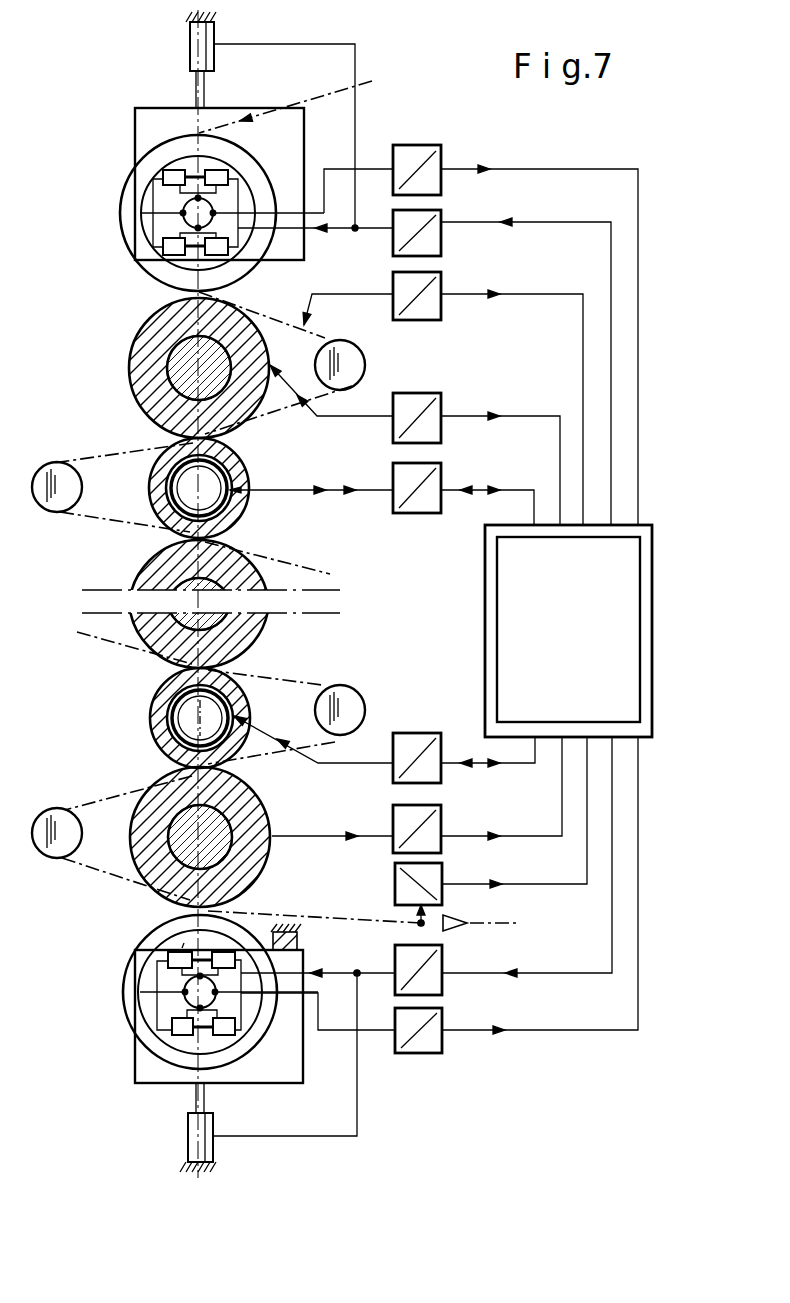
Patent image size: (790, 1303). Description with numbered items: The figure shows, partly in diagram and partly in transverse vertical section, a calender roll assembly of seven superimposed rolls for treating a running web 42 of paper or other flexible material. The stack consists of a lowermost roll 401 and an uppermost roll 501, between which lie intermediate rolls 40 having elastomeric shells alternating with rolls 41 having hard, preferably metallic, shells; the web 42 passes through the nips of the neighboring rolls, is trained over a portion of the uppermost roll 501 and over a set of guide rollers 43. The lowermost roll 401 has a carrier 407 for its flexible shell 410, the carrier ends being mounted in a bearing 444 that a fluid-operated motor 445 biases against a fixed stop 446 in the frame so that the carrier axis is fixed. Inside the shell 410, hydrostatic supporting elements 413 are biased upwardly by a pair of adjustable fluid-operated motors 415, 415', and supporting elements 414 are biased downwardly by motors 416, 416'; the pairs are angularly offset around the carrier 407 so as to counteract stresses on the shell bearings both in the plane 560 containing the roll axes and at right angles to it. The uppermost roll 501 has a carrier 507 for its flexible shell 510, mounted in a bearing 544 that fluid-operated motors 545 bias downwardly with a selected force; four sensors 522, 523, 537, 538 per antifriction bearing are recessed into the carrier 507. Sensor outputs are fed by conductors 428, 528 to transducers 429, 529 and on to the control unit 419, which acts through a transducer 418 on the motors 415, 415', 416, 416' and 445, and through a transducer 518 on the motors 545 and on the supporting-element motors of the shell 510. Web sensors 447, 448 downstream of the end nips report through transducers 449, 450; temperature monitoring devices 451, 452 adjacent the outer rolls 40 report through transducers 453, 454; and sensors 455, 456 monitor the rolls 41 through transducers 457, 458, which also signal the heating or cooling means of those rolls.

The intermediate roll with elastomeric shell 40 is at (145, 371).
The intermediate roll with hard shell 41 is at (243, 466).
The running web 42 is at (372, 80).
The guide roller 43 is at (363, 352).
The lowermost roll 401 is at (170, 1072).
The carrier 407 is at (184, 992).
The flexible shell 410 is at (235, 1052).
The hydrostatic supporting element 413 is at (182, 943).
The hydrostatic supporting element 414 is at (184, 1040).
The adjustable fluid-operated motor 415 is at (142, 981).
The adjustable fluid-operated motor 415' is at (263, 954).
The adjustable fluid-operated motor 416 is at (145, 1036).
The adjustable fluid-operated motor 416' is at (284, 1055).
The transducer 418 is at (443, 960).
The control unit 419 is at (585, 644).
The conductor 428 is at (375, 1032).
The transducer 429 is at (427, 1042).
The bearing 444 is at (145, 1074).
The fluid-operated motor 445 is at (198, 1148).
The fixed stop 446 is at (299, 941).
The web sensor 447 is at (314, 317).
The web sensor 448 is at (417, 922).
The transducer 449 is at (441, 317).
The transducer 450 is at (430, 875).
The temperature monitoring device 451 is at (331, 379).
The temperature monitoring device 452 is at (281, 836).
The transducer 453 is at (442, 407).
The transducer 454 is at (433, 822).
The temperature sensor 455 is at (248, 506).
The temperature sensor 456 is at (246, 712).
The transducer 457 is at (442, 483).
The transducer 458 is at (422, 742).
The uppermost roll 501 is at (124, 248).
The carrier 507 is at (195, 212).
The flexible shell 510 is at (143, 258).
The transducer 518 is at (441, 243).
The sensor 522 is at (198, 176).
The sensor 523 is at (196, 238).
The conductor 528 is at (335, 169).
The transducer 529 is at (443, 162).
The sensor 537 is at (182, 213).
The sensor 538 is at (215, 211).
The bearing 544 is at (147, 123).
The fluid-operated motor 545 is at (216, 35).
The plane 560 is at (199, 706).